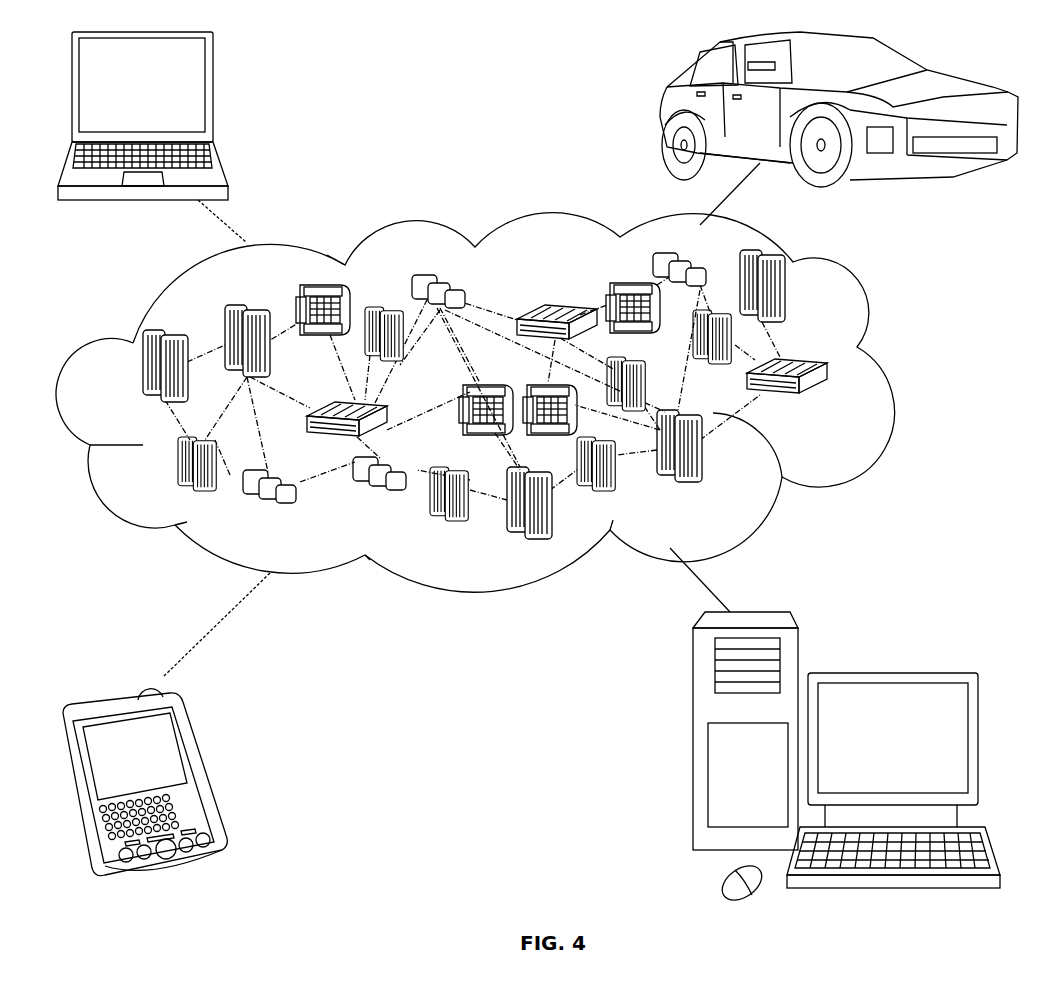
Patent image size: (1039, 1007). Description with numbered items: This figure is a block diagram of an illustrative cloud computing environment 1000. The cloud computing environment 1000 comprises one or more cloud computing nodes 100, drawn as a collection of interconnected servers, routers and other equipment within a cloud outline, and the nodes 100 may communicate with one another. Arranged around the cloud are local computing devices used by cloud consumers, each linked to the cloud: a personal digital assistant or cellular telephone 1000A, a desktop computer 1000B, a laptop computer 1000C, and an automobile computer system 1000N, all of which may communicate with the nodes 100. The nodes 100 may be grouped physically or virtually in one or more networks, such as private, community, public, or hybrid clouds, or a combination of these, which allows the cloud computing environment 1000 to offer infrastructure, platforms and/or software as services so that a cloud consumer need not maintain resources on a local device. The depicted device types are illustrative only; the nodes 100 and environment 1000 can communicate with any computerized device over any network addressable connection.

The cloud computing nodes 100 is at (836, 407).
The cloud computing environment 1000 is at (887, 373).
The personal digital assistant (PDA) or cellular telephone 1000A is at (205, 768).
The desktop computer 1000B is at (887, 672).
The laptop computer 1000C is at (215, 92).
The automobile computer system 1000N is at (658, 108).